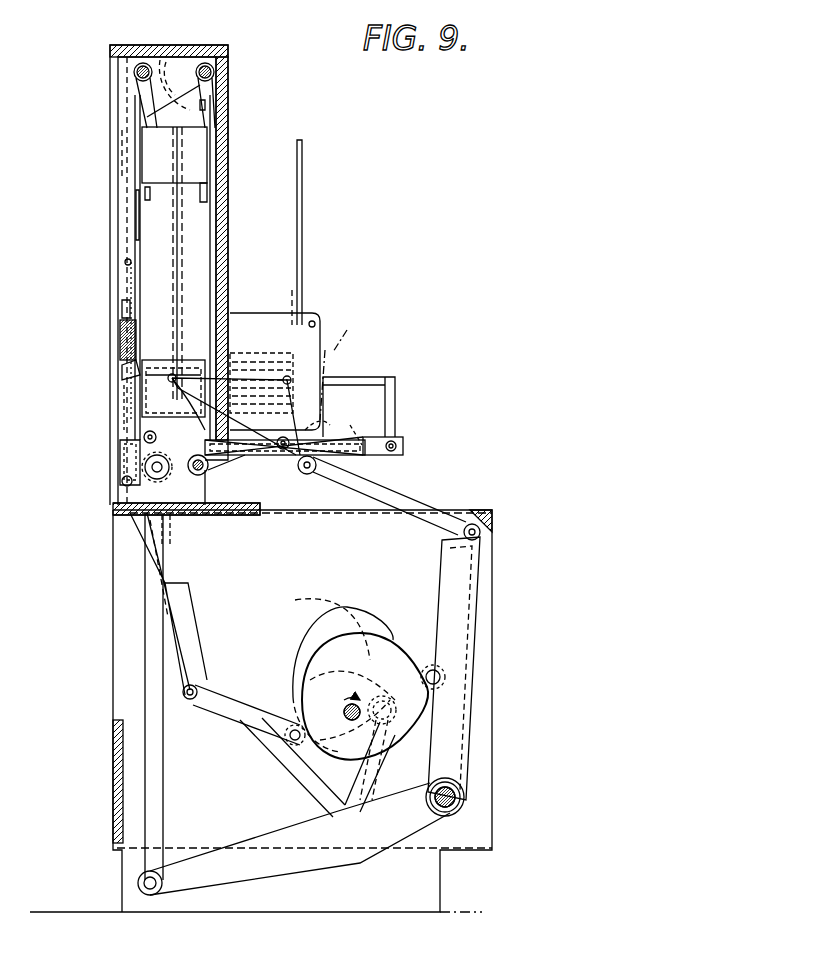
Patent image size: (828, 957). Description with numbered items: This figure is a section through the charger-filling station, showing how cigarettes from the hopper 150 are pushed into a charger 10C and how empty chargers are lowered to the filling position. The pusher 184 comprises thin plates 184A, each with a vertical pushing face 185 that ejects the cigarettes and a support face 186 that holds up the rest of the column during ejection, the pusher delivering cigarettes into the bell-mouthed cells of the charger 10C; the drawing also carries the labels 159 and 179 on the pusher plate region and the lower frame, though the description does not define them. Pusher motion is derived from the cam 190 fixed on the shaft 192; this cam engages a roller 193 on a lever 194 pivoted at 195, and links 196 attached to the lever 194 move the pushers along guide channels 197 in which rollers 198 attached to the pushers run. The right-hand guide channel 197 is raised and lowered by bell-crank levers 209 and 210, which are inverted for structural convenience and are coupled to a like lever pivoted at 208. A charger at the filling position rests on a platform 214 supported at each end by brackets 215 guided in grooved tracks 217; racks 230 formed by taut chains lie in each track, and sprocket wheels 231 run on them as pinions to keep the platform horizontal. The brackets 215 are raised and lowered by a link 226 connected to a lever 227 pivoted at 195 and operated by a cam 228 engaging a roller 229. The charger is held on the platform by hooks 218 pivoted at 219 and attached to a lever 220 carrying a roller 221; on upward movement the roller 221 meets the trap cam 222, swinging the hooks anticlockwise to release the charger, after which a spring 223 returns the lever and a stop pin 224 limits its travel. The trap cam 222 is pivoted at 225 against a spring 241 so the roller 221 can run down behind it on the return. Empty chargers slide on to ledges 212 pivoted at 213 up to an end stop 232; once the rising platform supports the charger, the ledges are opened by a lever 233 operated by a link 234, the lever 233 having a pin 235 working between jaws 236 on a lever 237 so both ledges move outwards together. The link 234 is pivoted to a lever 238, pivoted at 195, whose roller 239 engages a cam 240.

The lever 237 is at (167, 46).
The pivot 213 is at (135, 66).
The jaws 236 is at (226, 99).
The pin 235 is at (212, 112).
The lever 233 is at (147, 117).
The link 234 is at (126, 152).
The ledges 212 is at (207, 197).
The racks 230 is at (136, 230).
The end stop 232 is at (177, 267).
The hopper 150 is at (272, 182).
The pivot 225 is at (125, 262).
The grooved tracks 217 is at (128, 293).
The spring 241 is at (120, 312).
The hooks 218 is at (120, 347).
The cam 222 is at (122, 377).
The spring 223 is at (130, 403).
The stop pin 224 is at (145, 435).
The lever 220 is at (130, 456).
The roller 221 is at (125, 485).
The pivot 219 is at (119, 513).
The sprocket wheels 231 is at (203, 516).
The brackets 215 is at (212, 508).
The charger 10C is at (193, 360).
The plate 159 is at (275, 303).
The pushing face 185 is at (307, 380).
The plates 184A is at (356, 356).
The support face 186 is at (357, 377).
The pusher 184 is at (372, 386).
The rollers 198 is at (335, 421).
The bell-crank lever 209 is at (253, 462).
The platform 214 is at (222, 473).
The pivot 208 is at (203, 474).
The bell-crank lever 210 is at (344, 463).
The guide channels 197 is at (403, 445).
The links 196 is at (428, 501).
The frame 179 is at (292, 590).
The link 226 is at (156, 805).
The lever 238 is at (224, 700).
The roller 239 is at (290, 746).
The cam 228 is at (300, 668).
The cam 190 is at (377, 650).
The cam 240 is at (307, 650).
The shaft 192 is at (352, 700).
The roller 229 is at (387, 683).
The roller 193 is at (445, 672).
The lever 194 is at (462, 594).
The pivot 195 is at (464, 808).
The lever 227 is at (300, 840).